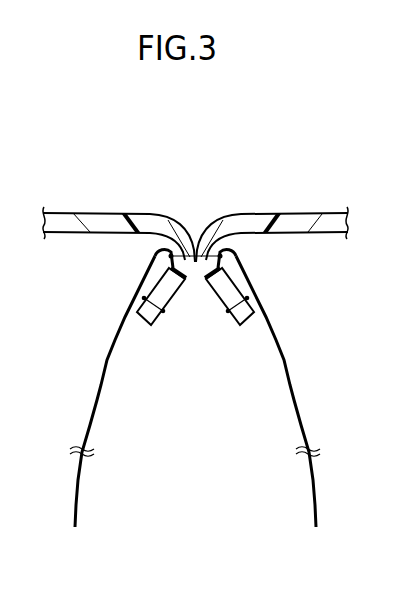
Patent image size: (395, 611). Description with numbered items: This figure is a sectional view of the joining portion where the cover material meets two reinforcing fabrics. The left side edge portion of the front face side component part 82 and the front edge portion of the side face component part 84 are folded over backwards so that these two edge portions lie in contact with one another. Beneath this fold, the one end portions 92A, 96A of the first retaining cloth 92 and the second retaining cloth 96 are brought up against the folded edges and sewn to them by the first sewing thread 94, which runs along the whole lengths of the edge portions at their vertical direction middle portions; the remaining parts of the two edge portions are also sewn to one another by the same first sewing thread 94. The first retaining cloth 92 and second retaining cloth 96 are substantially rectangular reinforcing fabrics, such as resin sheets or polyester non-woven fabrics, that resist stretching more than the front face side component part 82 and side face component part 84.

The front face side component part 82 is at (292, 220).
The side face component part 84 is at (86, 220).
The first sewing thread 94 is at (195, 258).
The first retaining cloth 92 is at (92, 386).
The second retaining cloth 96 is at (300, 401).
The one end portion of the first retaining cloth 92A is at (162, 291).
The one end portion of the second retaining cloth 96A is at (229, 291).